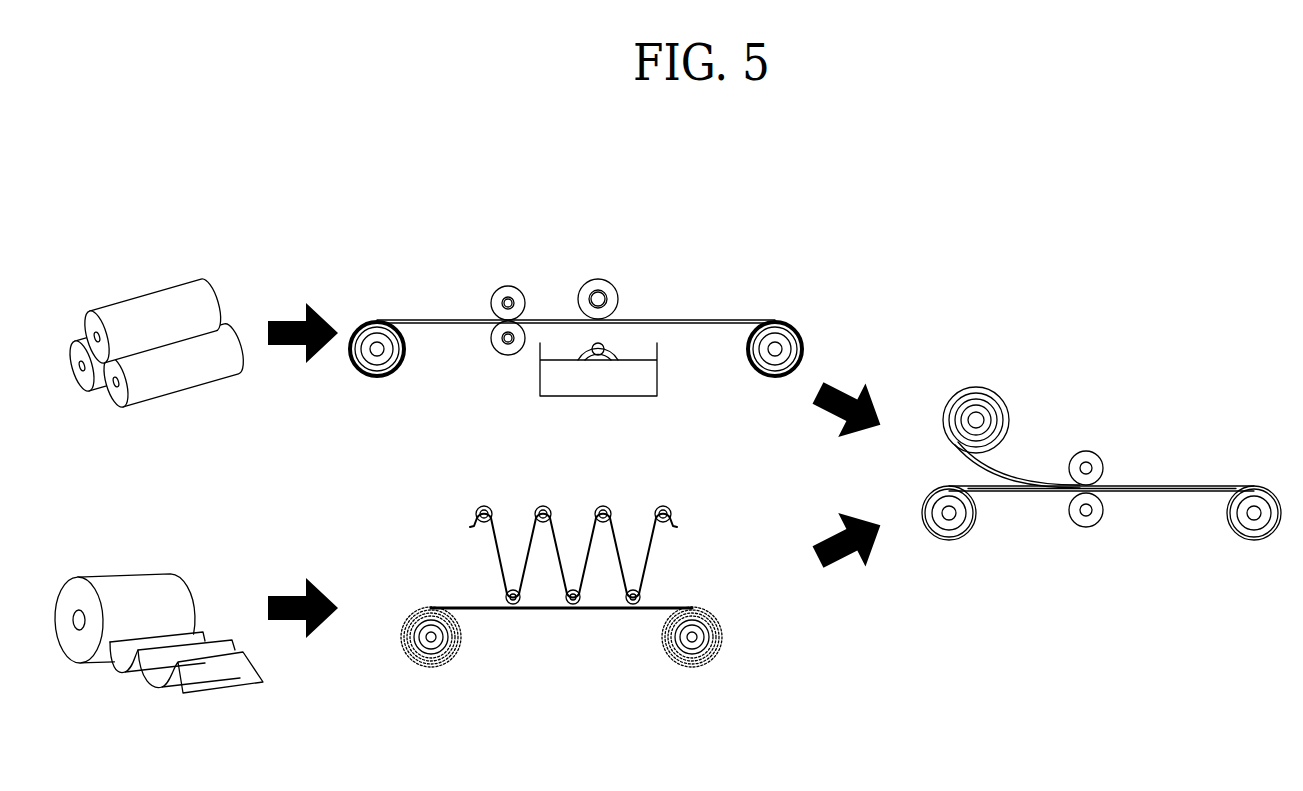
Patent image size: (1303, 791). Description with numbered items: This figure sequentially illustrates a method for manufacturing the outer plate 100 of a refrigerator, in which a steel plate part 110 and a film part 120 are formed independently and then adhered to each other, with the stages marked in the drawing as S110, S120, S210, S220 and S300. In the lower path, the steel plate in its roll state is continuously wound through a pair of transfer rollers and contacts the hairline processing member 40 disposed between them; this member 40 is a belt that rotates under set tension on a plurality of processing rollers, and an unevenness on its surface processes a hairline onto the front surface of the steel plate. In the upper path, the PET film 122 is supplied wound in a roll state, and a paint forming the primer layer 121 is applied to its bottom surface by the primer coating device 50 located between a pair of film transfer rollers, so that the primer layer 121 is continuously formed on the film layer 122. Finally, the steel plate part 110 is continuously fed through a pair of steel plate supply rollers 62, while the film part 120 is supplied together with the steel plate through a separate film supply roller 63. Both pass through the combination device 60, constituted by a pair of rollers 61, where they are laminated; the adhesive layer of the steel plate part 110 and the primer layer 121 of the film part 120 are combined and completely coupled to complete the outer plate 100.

The base sheet preparing step S110 is at (128, 562).
The base sheet drying step S120 is at (561, 587).
The film roll preparing step S210 is at (148, 280).
The film coating step S220 is at (576, 275).
The laminating step S300 is at (1101, 407).
The hairline processing member 40 is at (618, 505).
The primer coating device 50 is at (620, 280).
The combination device 60 is at (1126, 481).
The pressing rollers 61 is at (1090, 472).
The steel plate supply rollers 62 is at (949, 522).
The film supply roller 63 is at (971, 405).
The outer plate 100 is at (1207, 481).
The steel plate part 110 is at (1030, 505).
The film part 120 is at (1017, 466).
The primer layer 121 is at (698, 318).
The PET film 122 is at (430, 318).